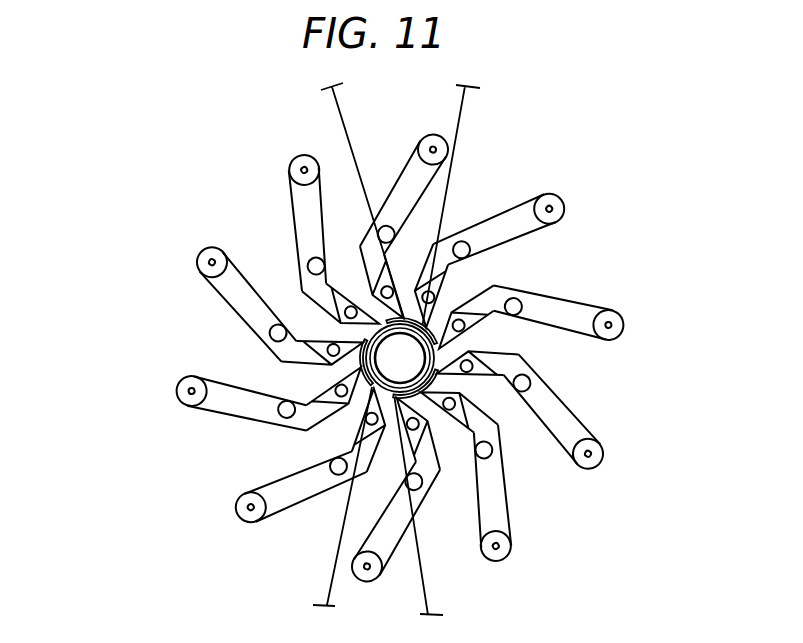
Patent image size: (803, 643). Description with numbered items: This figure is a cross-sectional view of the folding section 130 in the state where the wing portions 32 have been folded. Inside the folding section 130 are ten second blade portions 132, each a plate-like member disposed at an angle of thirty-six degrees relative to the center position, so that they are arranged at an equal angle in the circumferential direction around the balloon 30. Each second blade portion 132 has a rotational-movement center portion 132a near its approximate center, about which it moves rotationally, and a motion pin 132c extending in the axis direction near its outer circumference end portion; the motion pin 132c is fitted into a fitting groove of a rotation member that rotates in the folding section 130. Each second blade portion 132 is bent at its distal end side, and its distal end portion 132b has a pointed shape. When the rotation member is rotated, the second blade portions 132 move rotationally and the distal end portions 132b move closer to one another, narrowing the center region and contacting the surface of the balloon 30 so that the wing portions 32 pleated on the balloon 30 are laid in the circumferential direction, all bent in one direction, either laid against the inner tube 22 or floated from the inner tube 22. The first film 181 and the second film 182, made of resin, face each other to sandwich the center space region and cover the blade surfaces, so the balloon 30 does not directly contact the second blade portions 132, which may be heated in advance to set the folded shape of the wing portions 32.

The folding section 130 is at (200, 165).
The first film 181 is at (332, 103).
The second film 182 is at (465, 108).
The balloon 30 is at (412, 318).
The inner tube 22 is at (440, 350).
The wing portions 32 is at (432, 334).
The second blade portions 132 is at (237, 415).
The rotational-movement center portion 132a is at (278, 424).
The distal end portion 132b is at (437, 378).
The motion pin 132c is at (177, 393).